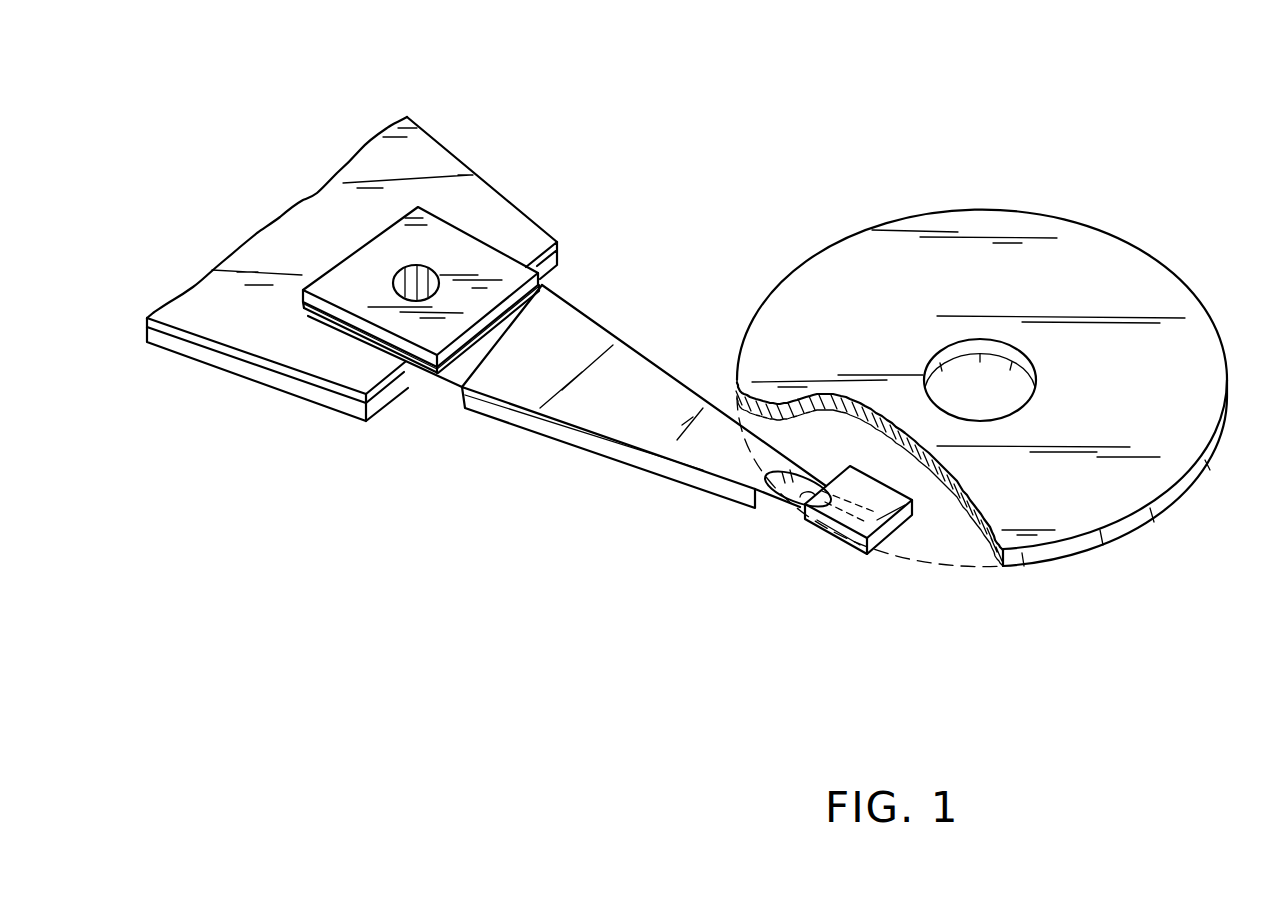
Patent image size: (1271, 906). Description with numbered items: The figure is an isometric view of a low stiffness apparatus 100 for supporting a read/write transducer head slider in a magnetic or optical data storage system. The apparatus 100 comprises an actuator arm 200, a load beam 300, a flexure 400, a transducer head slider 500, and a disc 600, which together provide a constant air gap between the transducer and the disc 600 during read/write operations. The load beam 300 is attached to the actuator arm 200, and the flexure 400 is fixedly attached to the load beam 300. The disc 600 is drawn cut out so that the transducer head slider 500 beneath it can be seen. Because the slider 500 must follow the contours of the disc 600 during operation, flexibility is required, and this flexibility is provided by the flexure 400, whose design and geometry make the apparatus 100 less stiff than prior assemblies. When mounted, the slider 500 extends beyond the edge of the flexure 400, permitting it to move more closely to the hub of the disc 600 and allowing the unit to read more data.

The low stiffness apparatus 100 is at (508, 430).
The actuator arm 200 is at (443, 146).
The load beam 300 is at (617, 334).
The flexure 400 is at (810, 499).
The transducer head slider 500 is at (849, 551).
The disc 600 is at (1103, 238).